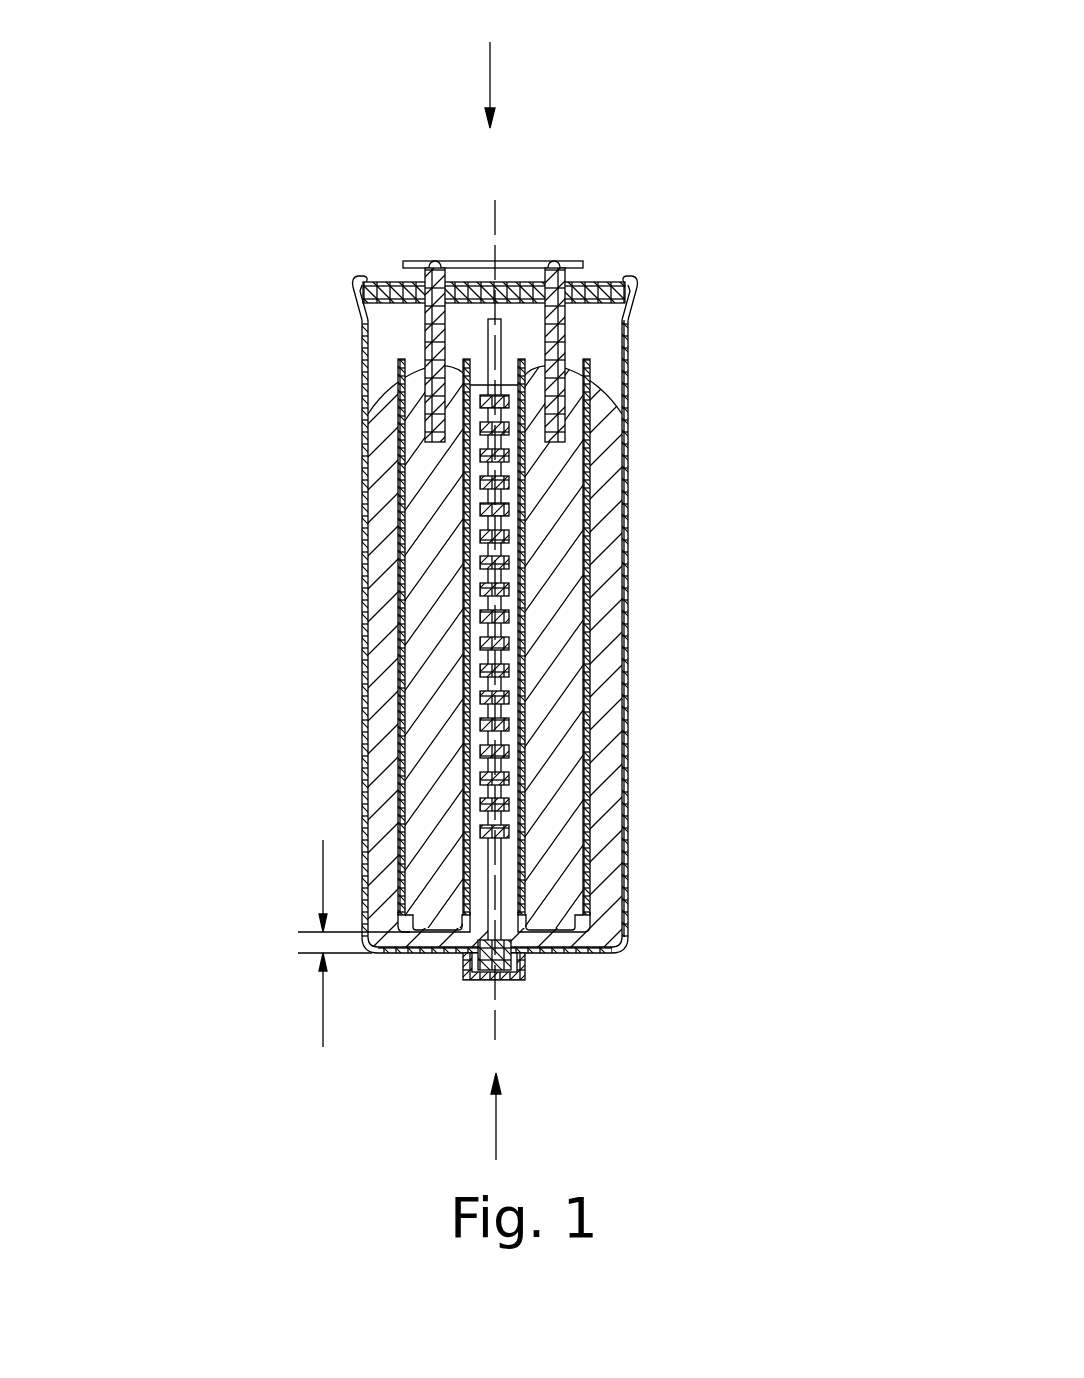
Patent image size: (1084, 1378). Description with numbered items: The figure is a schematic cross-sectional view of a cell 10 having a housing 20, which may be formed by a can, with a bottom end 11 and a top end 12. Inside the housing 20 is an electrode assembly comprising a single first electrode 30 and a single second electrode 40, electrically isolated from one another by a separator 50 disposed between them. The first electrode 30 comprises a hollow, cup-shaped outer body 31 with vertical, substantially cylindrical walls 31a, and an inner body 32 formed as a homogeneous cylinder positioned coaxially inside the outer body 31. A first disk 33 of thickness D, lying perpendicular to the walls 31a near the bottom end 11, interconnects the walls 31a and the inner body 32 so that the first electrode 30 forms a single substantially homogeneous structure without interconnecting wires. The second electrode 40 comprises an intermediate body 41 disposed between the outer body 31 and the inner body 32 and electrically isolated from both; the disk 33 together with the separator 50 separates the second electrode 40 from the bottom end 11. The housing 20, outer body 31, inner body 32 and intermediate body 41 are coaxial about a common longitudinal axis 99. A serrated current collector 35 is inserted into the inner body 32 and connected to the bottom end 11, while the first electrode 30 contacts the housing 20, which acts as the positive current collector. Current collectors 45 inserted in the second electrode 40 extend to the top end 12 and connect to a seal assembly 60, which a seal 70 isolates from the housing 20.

The cell 10 is at (680, 200).
The bottom end 11 is at (497, 1123).
The top end 12 is at (494, 68).
The housing 20 is at (628, 422).
The first electrode 30 is at (605, 562).
The outer body 31 is at (598, 630).
The walls 31a is at (600, 505).
The inner body 32 is at (510, 792).
The first disk 33 is at (600, 952).
The current collector 35 is at (479, 695).
The second electrode 40 is at (555, 722).
The intermediate body 41 is at (582, 912).
The current collectors 45 is at (435, 437).
The separator 50 is at (588, 873).
The seal assembly 60 is at (460, 231).
The seal 70 is at (390, 293).
The longitudinal axis 99 is at (493, 222).
The thickness D is at (341, 943).